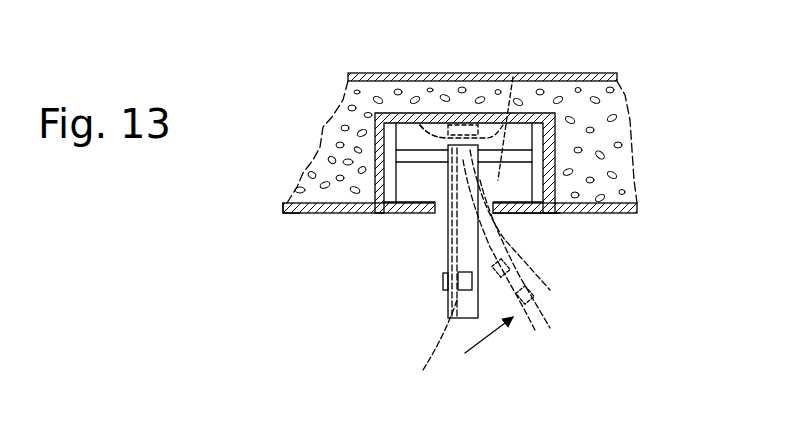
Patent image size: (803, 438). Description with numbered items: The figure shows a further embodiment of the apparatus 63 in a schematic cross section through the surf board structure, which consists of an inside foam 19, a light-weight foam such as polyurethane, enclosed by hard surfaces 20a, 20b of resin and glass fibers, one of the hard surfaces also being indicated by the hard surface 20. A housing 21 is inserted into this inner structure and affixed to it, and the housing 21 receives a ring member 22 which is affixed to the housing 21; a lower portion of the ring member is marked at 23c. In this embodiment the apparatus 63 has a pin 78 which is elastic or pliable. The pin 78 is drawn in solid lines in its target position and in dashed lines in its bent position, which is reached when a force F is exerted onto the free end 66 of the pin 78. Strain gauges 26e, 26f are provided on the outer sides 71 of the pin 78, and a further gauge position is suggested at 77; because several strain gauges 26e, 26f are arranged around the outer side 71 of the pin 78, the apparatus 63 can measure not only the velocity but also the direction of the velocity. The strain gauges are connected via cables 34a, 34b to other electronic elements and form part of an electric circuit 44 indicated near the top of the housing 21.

The inside foam 19 is at (628, 100).
The hard surface 20a is at (358, 72).
The base plate 20 is at (345, 213).
The hard surface 20b is at (292, 213).
The housing 21 is at (555, 133).
The ring member 22 is at (565, 207).
The plate underside 23c is at (512, 213).
The cable 34a is at (428, 100).
The cable 34b is at (500, 125).
The electric circuit 44 is at (453, 125).
The free end 66 is at (447, 318).
The outer side 71 is at (449, 258).
The line 77 is at (513, 77).
The pin 78 is at (448, 233).
The strain gauge 26e is at (443, 288).
The strain gauge 26f is at (580, 316).
The apparatus 63 is at (328, 327).
The force F is at (493, 345).